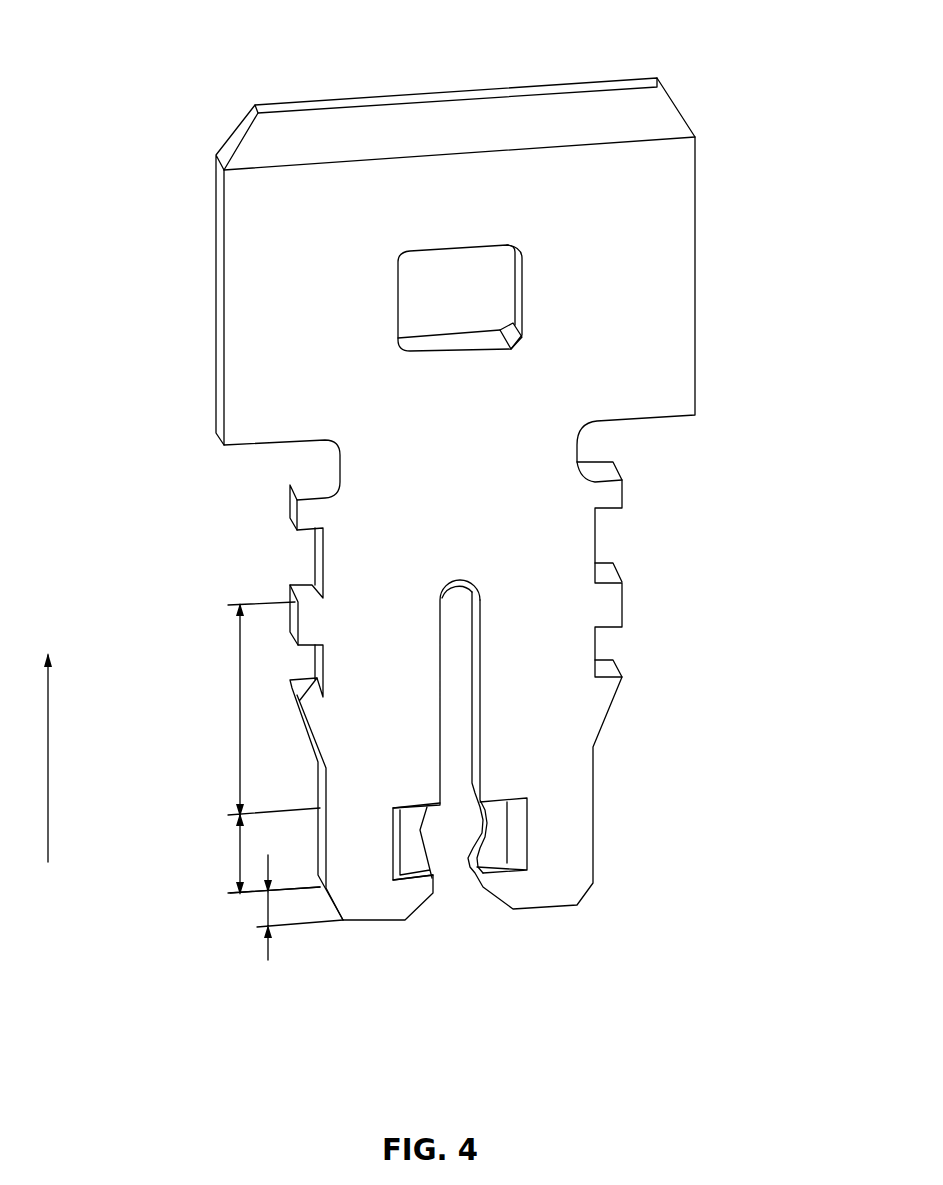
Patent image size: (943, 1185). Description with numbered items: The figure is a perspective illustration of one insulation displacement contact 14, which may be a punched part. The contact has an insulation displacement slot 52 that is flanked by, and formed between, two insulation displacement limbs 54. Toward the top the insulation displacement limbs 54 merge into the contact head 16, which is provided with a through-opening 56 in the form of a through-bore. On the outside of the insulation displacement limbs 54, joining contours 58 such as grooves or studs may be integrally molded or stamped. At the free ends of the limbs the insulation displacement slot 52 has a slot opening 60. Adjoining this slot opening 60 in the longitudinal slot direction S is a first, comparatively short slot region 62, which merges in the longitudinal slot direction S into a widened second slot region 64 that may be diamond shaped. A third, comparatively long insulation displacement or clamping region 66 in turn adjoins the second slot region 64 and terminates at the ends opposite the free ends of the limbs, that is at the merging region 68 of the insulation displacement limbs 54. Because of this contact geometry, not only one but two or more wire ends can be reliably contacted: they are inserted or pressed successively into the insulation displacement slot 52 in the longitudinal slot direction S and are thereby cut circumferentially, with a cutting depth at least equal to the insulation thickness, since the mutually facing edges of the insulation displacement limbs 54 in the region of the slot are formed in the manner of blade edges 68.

The insulation displacement contact 14 is at (719, 105).
The contact head 16 is at (650, 193).
The insulation displacement slot 52 is at (457, 640).
The insulation displacement limbs 54 is at (386, 637).
The through-opening 56 is at (465, 300).
The joining contours 58 is at (622, 490).
The slot opening 60 is at (455, 880).
The first slot region 62 is at (267, 909).
The second slot region 64 is at (240, 855).
The clamping region 66 is at (238, 710).
The merging region 68 is at (460, 580).
The longitudinal slot direction S is at (50, 753).